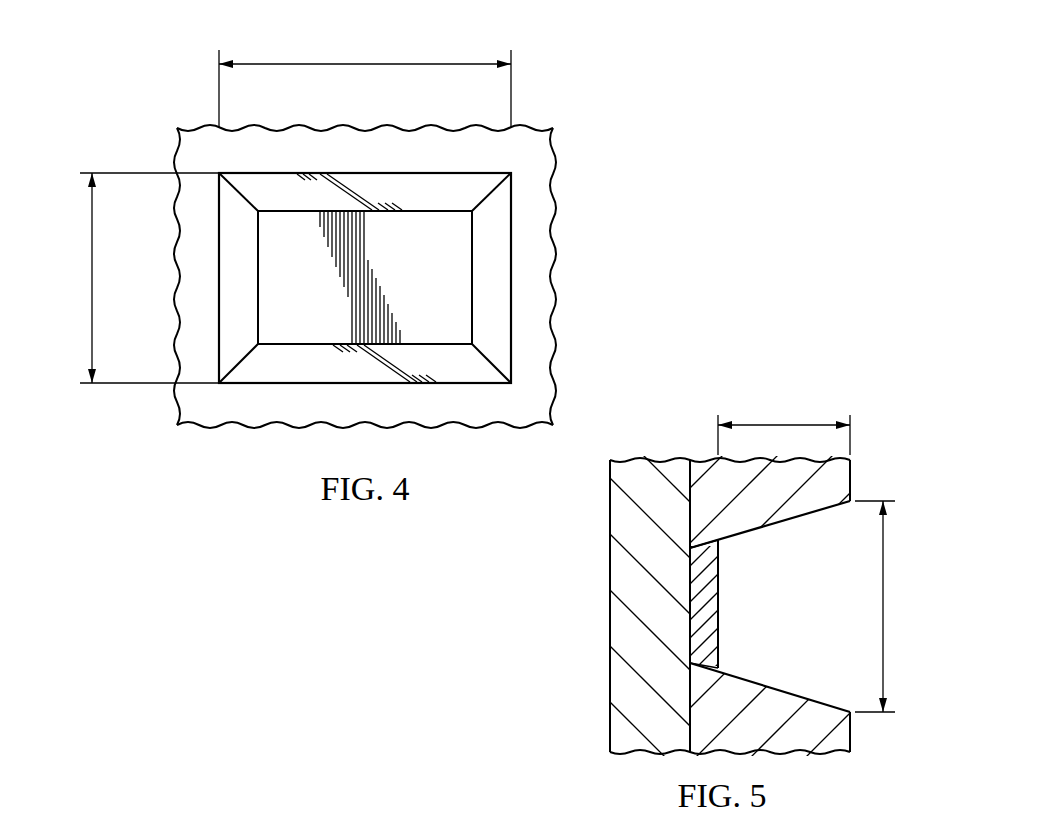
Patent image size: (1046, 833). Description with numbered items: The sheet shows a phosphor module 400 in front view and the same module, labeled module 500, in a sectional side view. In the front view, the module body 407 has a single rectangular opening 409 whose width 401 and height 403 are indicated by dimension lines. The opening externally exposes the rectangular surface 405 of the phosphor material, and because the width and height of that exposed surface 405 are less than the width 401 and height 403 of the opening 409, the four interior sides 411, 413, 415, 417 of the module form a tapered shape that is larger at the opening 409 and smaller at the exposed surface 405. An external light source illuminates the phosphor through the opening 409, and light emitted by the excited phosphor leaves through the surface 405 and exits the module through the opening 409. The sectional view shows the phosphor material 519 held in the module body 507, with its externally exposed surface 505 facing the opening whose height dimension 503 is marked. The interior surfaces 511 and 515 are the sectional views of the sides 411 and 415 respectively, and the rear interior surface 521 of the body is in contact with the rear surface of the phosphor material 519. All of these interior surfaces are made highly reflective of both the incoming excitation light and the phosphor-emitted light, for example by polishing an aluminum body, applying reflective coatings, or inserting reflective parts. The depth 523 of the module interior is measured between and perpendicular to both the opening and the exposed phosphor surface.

In FIG. 4, the phosphor module 400 is at (163, 62).
In FIG. 4, the width 401 is at (362, 63).
In FIG. 4, the height 403 is at (90, 278).
In FIG. 4, the rectangular surface 405 is at (265, 250).
In FIG. 4, the module body 407 is at (466, 437).
In FIG. 4, the rectangular opening 409 is at (470, 173).
In FIG. 4, the interior side 411 is at (277, 182).
In FIG. 4, the interior side 413 is at (503, 226).
In FIG. 4, the interior side 415 is at (262, 375).
In FIG. 4, the interior side 417 is at (225, 300).
In FIG. 5, the module 500 is at (845, 352).
In FIG. 5, the height dimension 503 is at (885, 525).
In FIG. 5, the externally exposed surface 505 is at (718, 607).
In FIG. 5, the module body 507 is at (612, 622).
In FIG. 5, the interior surface 511 is at (813, 515).
In FIG. 5, the interior surface 515 is at (797, 687).
In FIG. 5, the phosphor material 519 is at (710, 637).
In FIG. 5, the rear interior surface 521 is at (695, 577).
In FIG. 5, the depth 523 is at (782, 423).